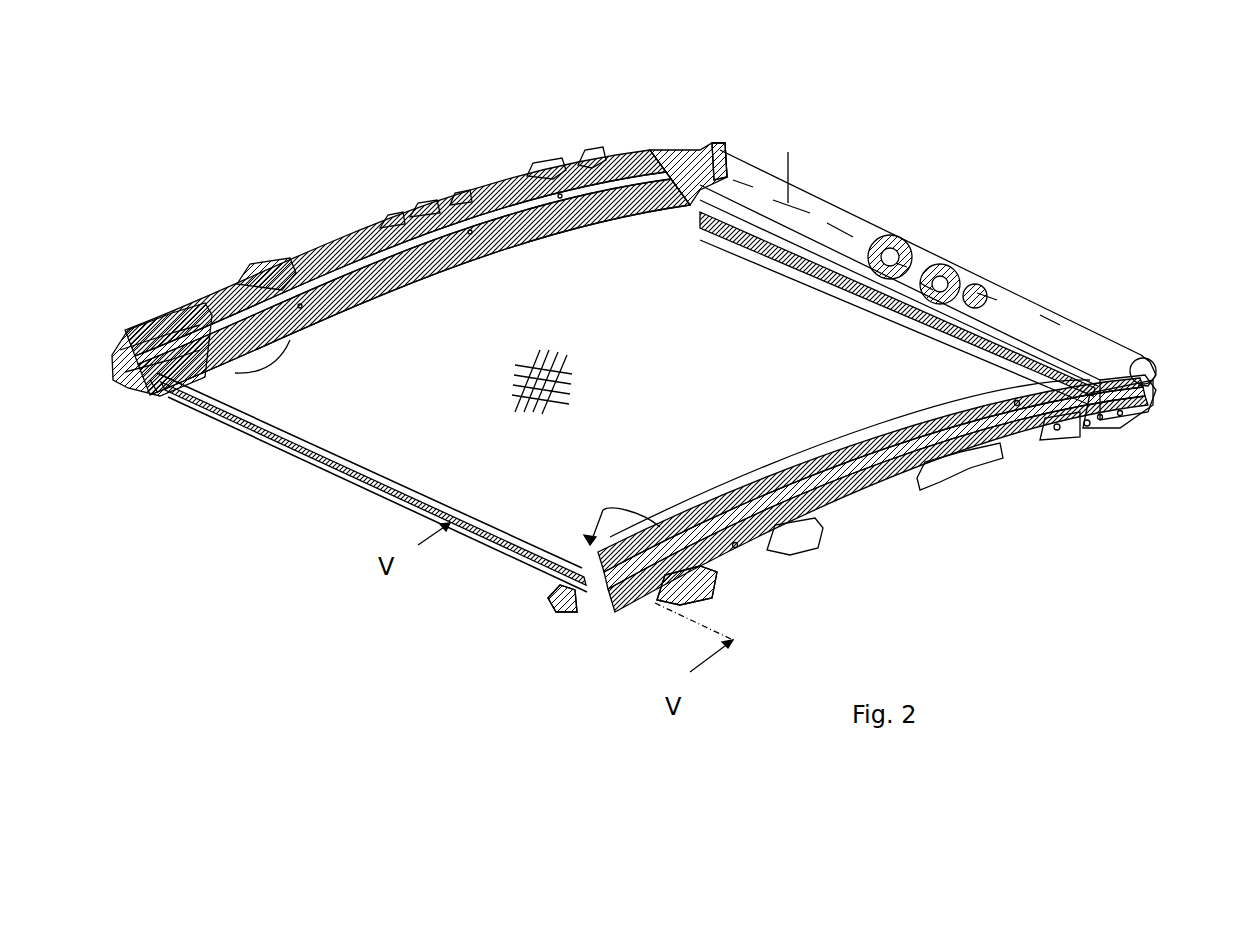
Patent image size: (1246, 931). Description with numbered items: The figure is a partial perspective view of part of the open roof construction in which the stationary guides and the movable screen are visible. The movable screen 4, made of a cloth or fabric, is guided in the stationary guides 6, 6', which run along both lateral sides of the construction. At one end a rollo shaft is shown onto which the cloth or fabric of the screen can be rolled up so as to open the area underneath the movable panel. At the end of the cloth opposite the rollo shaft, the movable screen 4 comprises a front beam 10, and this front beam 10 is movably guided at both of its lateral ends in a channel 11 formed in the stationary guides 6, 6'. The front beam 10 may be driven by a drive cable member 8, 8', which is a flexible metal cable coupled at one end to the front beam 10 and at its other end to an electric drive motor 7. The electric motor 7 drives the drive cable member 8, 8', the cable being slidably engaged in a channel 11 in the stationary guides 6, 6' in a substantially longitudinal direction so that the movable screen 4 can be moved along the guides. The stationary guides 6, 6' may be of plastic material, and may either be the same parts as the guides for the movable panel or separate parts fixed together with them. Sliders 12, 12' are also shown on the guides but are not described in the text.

The movable screen 4 is at (347, 340).
The stationary guide 6 is at (877, 493).
The stationary guide 6' is at (426, 214).
The electric drive motor 7 is at (912, 235).
The drive cable member 8 is at (964, 277).
The drive cable member 8' is at (488, 423).
The front beam 10 is at (327, 463).
The channel 11 is at (553, 587).
The slider 12 is at (776, 610).
The slider 12' is at (204, 165).